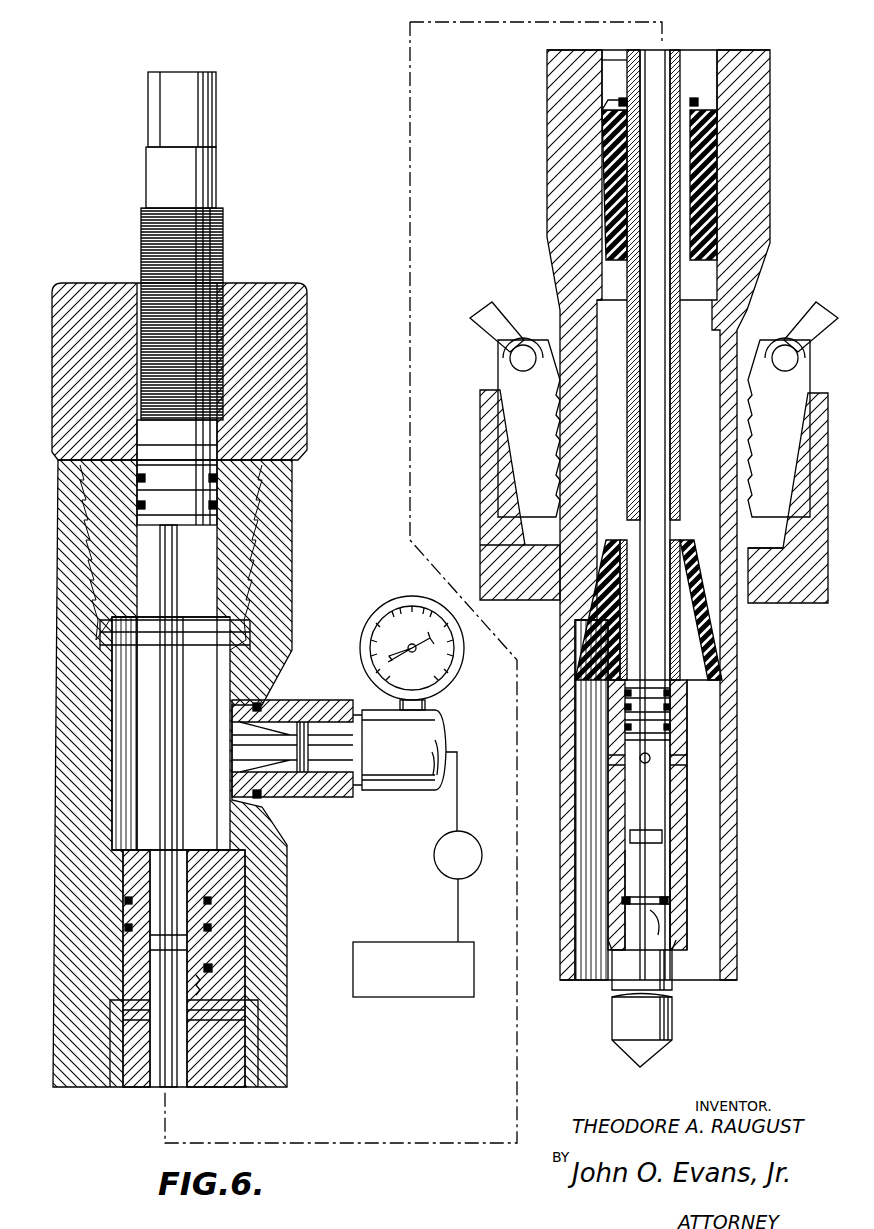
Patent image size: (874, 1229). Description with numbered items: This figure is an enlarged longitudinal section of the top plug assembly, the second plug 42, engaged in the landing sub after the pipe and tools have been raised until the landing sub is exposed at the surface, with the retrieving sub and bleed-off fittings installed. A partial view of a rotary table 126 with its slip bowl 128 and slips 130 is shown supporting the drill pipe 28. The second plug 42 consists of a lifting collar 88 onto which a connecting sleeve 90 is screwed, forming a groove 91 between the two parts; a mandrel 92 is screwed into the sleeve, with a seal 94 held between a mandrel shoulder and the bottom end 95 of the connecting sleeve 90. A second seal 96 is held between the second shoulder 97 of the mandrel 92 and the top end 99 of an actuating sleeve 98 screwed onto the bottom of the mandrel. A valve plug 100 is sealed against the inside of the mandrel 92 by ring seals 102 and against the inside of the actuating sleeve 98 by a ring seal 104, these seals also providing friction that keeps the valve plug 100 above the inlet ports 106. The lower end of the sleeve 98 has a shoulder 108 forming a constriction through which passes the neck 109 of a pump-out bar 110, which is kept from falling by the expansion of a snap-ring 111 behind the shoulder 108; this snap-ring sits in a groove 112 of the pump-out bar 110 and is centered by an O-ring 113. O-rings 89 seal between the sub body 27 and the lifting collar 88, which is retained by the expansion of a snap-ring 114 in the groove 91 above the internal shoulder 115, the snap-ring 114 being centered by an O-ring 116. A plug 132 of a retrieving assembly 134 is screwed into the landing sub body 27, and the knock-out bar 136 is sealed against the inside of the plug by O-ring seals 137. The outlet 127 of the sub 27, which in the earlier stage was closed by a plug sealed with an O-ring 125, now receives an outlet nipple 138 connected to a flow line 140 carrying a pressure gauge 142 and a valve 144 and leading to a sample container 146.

The sub body 27 is at (70, 672).
The drill pipe 28 is at (732, 893).
The second plug 42 is at (698, 302).
The lifting collar 88 is at (212, 900).
The O-rings 89 is at (212, 928).
The connecting sleeve 90 is at (200, 1072).
The groove 91 is at (212, 950).
The mandrel 92 is at (612, 322).
The seal 94 is at (712, 190).
The bottom end of connecting sleeve 95 is at (700, 96).
The second seal 96 is at (718, 640).
The second shoulder 97 is at (673, 535).
The actuating sleeve 98 is at (680, 812).
The top end of actuating sleeve 99 is at (700, 668).
The valve plug 100 is at (672, 681).
The ring seals 102 is at (622, 707).
The ring seal 104 is at (672, 727).
The inlet ports 106 is at (652, 762).
The shoulder 108 is at (690, 950).
The neck 109 is at (662, 843).
The pump-out bar 110 is at (672, 1018).
The snap-ring 111 is at (668, 900).
The groove 112 is at (662, 895).
The O-ring 113 is at (660, 920).
The snap-ring 114 is at (214, 968).
The internal shoulder 115 is at (210, 1000).
The O-ring 116 is at (205, 980).
The O-ring 125 is at (262, 703).
The rotary table 126 is at (790, 603).
The outlet 127 is at (232, 775).
The slip bowl 128 is at (806, 398).
The slips 130 is at (748, 348).
The plug 132 is at (296, 299).
The retrieving assembly 134 is at (240, 279).
The knock-out bar 136 is at (218, 190).
The O-ring seals 137 is at (222, 505).
The outlet nipple 138 is at (338, 797).
The flow line 140 is at (402, 790).
The pressure gauge 142 is at (452, 678).
The valve 144 is at (434, 848).
The sample container 146 is at (368, 942).